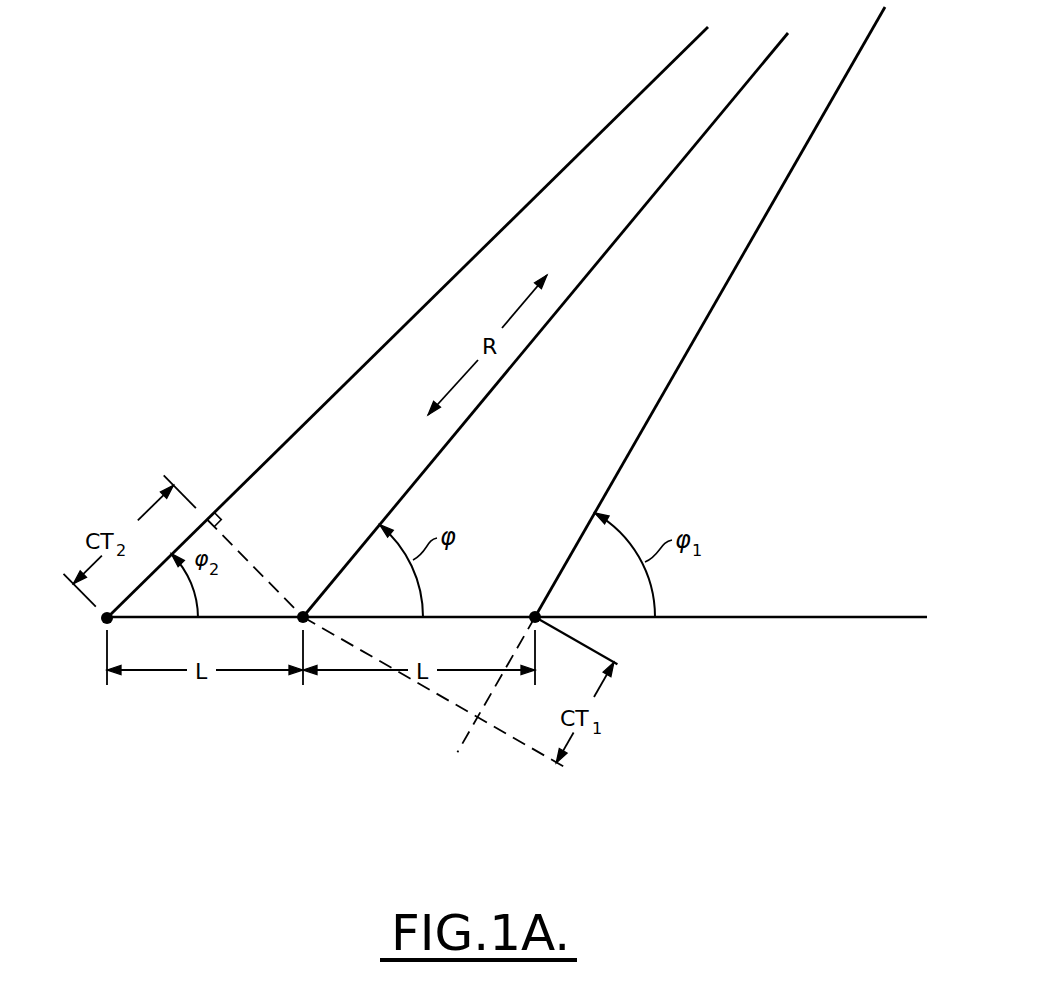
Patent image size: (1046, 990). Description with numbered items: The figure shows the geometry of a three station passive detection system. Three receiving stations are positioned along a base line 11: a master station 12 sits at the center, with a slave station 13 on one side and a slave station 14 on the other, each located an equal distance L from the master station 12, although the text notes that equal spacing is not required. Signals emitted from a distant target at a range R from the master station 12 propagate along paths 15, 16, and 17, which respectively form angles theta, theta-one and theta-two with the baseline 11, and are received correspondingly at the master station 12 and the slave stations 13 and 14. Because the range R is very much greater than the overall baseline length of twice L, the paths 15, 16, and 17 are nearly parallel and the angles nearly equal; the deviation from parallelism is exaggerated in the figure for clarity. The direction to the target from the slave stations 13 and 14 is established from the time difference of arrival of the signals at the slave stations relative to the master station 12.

The base line 11 is at (236, 617).
The master station 12 is at (303, 611).
The slave station 13 is at (533, 611).
The slave station 14 is at (100, 622).
The path 15 is at (675, 168).
The path 16 is at (733, 255).
The path 17 is at (628, 100).